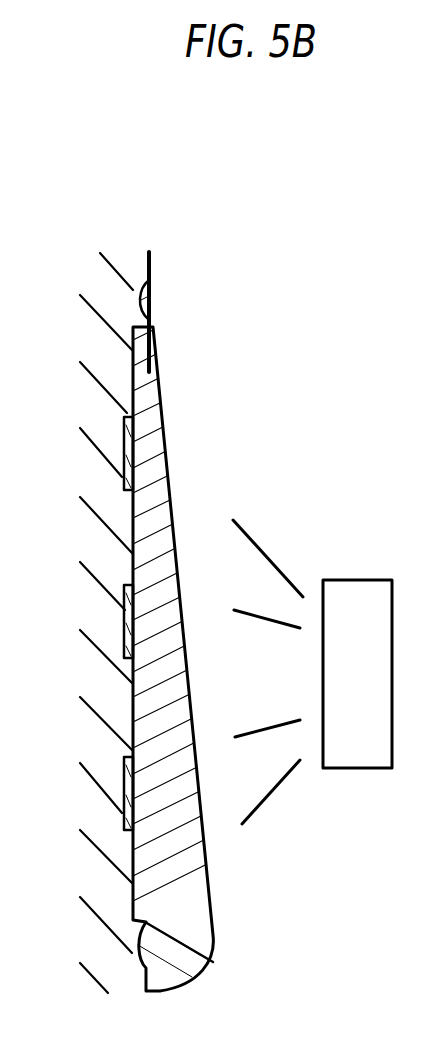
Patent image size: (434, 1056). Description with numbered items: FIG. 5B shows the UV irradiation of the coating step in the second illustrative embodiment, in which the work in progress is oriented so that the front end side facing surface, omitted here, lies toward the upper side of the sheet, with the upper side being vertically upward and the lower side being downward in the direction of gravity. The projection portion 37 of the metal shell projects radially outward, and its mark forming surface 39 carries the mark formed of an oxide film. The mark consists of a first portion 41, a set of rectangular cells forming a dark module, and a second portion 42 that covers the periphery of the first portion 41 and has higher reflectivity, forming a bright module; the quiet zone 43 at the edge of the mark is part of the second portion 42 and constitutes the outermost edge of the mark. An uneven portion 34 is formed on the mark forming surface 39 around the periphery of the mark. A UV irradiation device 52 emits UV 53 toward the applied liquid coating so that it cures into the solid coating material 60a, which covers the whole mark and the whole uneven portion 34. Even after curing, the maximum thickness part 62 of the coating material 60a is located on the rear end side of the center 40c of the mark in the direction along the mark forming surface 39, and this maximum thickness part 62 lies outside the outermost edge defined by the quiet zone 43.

The mark forming surface 39 is at (147, 268).
The uneven portion 34 is at (152, 300).
The first portion 41 is at (133, 432).
The second portion 42 is at (133, 507).
The center of the mark 40c is at (133, 620).
The projection portion 37 is at (107, 746).
The UV 53 is at (260, 728).
The UV irradiation device 52 is at (365, 758).
The coating material 60a is at (183, 833).
The maximum thickness part 62 is at (216, 940).
The quiet zone 43 is at (212, 960).